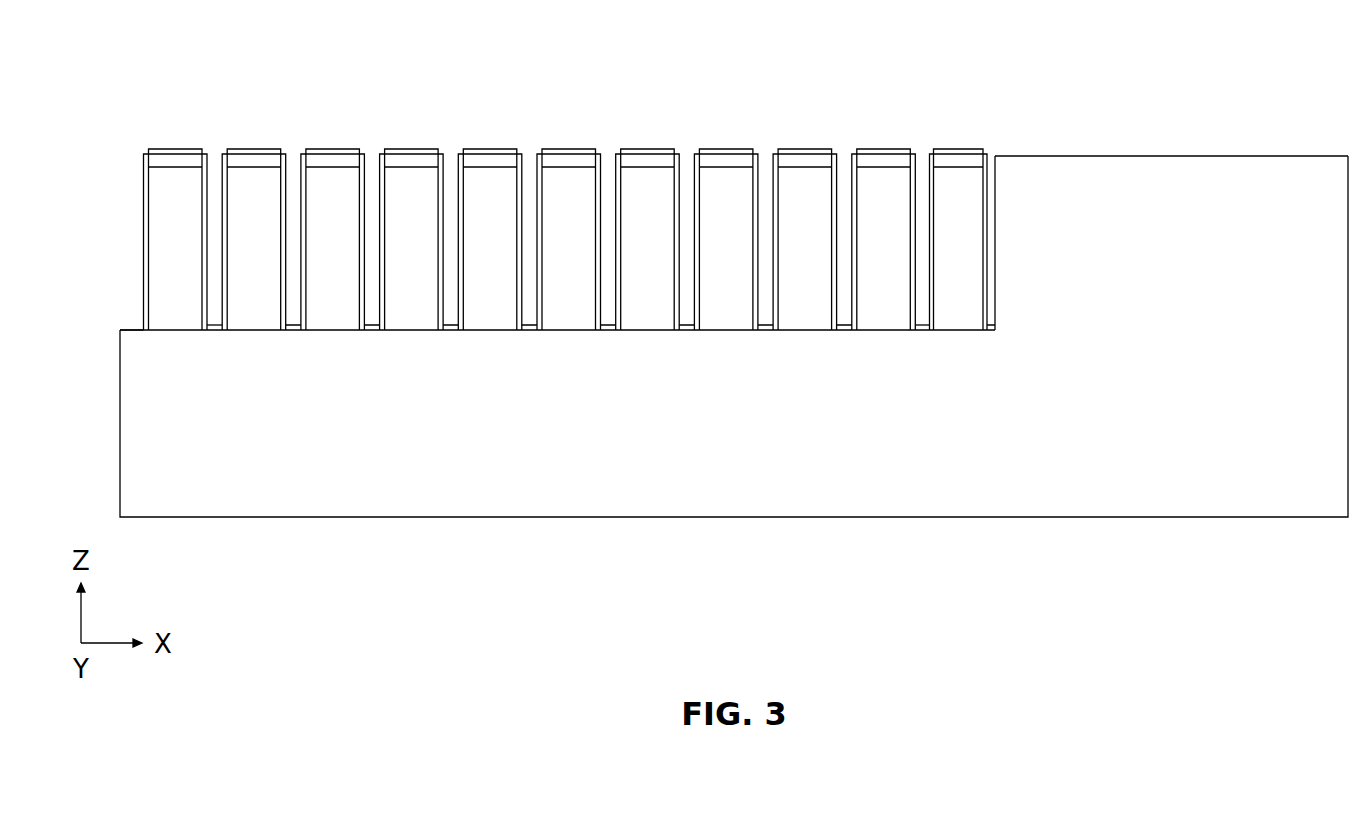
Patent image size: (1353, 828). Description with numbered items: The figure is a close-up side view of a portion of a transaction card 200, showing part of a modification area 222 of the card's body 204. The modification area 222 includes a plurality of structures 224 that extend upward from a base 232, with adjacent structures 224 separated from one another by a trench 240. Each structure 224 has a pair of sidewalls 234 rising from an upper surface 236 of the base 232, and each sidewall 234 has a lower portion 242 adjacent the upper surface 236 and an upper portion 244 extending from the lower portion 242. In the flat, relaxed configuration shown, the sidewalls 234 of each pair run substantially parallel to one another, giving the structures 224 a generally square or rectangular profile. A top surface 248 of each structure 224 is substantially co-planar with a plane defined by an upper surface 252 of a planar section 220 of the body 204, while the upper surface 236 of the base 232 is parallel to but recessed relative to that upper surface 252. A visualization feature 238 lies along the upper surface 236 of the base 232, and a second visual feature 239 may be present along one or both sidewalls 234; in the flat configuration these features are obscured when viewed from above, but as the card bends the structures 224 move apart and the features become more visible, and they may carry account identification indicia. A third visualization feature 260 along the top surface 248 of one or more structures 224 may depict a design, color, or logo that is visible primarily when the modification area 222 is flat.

The card 200 is at (791, 80).
The body 204 is at (1105, 505).
The planar section 220 is at (1270, 112).
The modification area 222 is at (489, 114).
The structures 224 is at (244, 176).
The base 232 is at (138, 328).
The sidewalls 234 is at (358, 190).
The upper surface of the base 236 is at (214, 334).
The visualization feature 238 is at (291, 334).
The second visual feature 239 is at (384, 302).
The trench 240 is at (924, 146).
The lower portion 242 is at (860, 313).
The upper portion 244 is at (850, 172).
The top surface 248 is at (556, 167).
The upper surface of the planar section 252 is at (1110, 155).
The third visualization feature 260 is at (171, 152).